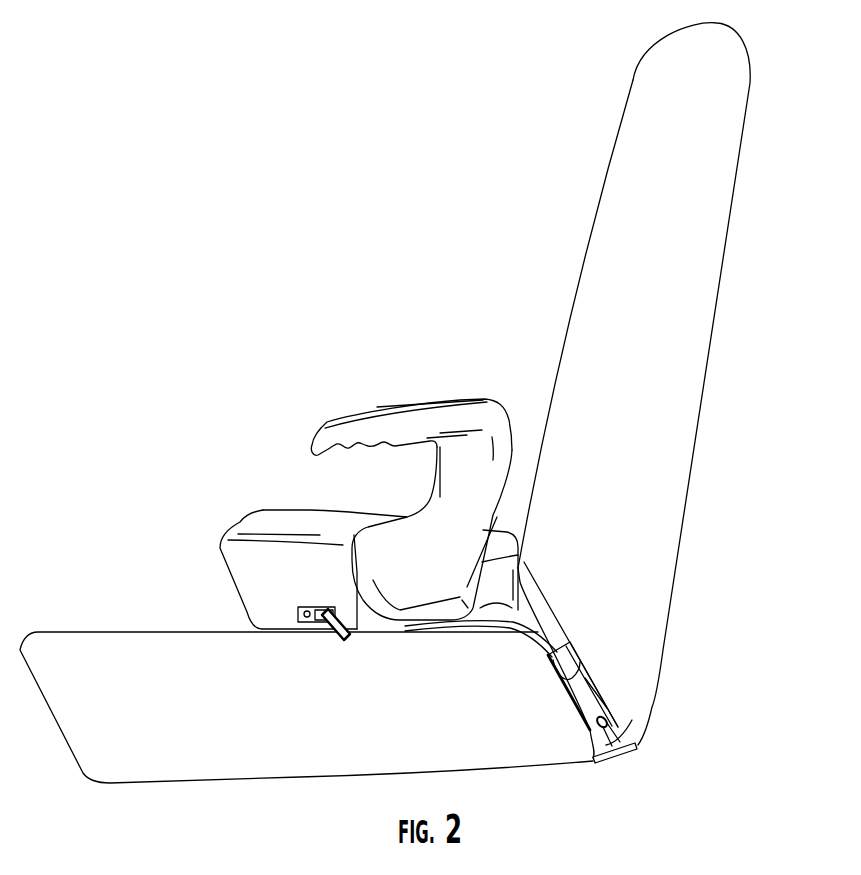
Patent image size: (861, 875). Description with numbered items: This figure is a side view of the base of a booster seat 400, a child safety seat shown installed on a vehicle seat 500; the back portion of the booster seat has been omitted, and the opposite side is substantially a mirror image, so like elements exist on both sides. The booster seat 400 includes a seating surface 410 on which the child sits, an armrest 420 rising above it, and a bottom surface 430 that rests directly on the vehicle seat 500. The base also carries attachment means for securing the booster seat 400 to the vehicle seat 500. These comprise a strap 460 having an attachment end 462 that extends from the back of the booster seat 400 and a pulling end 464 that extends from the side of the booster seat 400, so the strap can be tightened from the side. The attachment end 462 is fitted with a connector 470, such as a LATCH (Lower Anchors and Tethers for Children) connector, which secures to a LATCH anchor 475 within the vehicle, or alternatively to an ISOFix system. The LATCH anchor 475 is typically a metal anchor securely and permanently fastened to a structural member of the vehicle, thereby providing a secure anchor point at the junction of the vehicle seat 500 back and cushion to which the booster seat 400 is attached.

The booster seat 400 is at (255, 550).
The seating surface 410 is at (300, 508).
The armrest 420 is at (415, 418).
The bottom surface 430 is at (297, 637).
The strap 460 is at (487, 637).
The attachment end 462 is at (543, 652).
The pulling end 464 is at (347, 643).
The connector 470 is at (583, 700).
The LATCH anchor 475 is at (620, 732).
The vehicle seat 500 is at (675, 445).